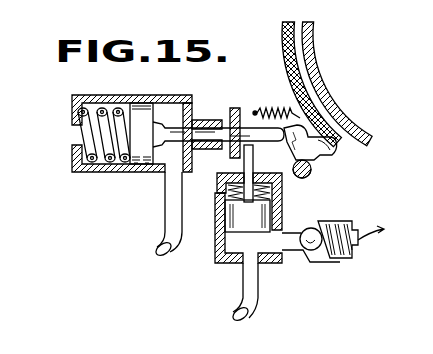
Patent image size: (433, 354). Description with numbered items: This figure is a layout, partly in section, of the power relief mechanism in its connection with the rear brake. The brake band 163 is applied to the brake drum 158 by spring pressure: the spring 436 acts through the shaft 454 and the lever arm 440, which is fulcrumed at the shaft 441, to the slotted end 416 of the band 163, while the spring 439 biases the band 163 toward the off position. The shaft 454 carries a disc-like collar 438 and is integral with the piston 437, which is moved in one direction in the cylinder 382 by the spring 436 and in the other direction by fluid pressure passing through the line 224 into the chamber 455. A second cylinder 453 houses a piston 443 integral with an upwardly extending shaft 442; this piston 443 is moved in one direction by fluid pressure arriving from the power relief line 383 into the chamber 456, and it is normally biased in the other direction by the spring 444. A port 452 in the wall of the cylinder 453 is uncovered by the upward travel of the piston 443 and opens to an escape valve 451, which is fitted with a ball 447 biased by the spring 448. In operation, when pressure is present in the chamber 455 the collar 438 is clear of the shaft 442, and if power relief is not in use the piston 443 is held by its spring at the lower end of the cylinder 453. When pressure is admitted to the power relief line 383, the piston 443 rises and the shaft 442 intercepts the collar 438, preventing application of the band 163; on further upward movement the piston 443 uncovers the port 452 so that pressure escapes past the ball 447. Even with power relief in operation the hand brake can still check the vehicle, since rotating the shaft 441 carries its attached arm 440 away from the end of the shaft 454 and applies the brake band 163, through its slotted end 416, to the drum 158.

The brake drum 158 is at (332, 107).
The brake band 163 is at (308, 87).
The line 224 is at (165, 233).
The cylinder 382 is at (82, 168).
The power relief line 383 is at (258, 294).
The slotted end 416 is at (336, 150).
The spring 436 is at (132, 128).
The piston 437 is at (137, 164).
The disc-like collar 438 is at (237, 108).
The spring 439 is at (294, 108).
The lever arm 440 is at (311, 166).
The shaft 441 is at (309, 176).
The shaft 442 is at (253, 162).
The piston 443 is at (242, 232).
The spring 444 is at (268, 192).
The ball 447 is at (302, 232).
The spring 448 is at (331, 260).
The escape valve 451 is at (343, 225).
The port 452 is at (283, 247).
The cylinder 453 is at (222, 228).
The shaft 454 is at (208, 125).
The chamber 455 is at (166, 142).
The chamber 456 is at (262, 262).